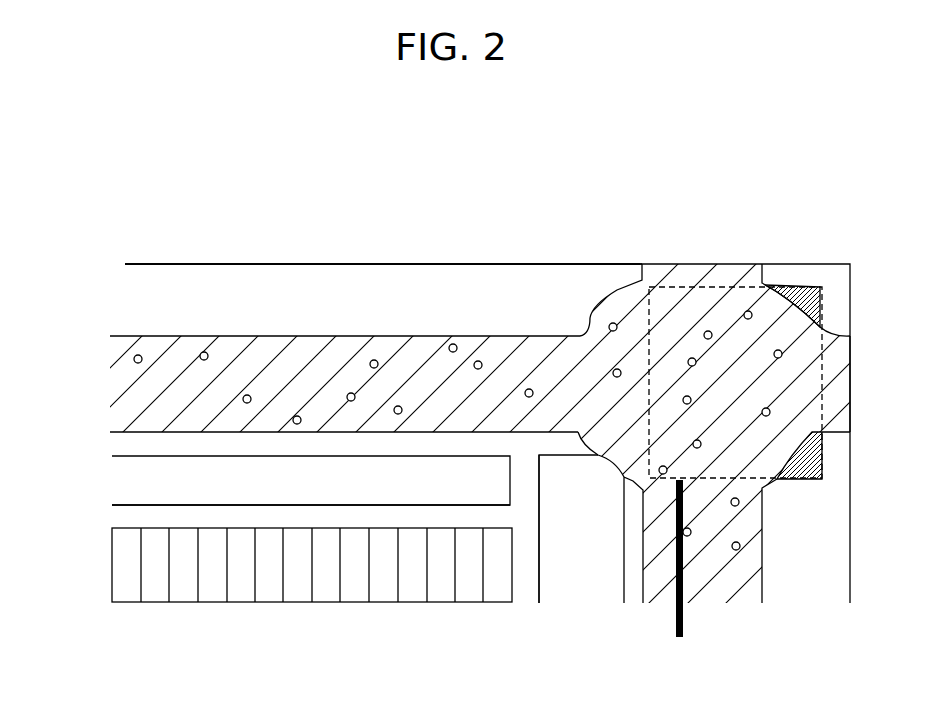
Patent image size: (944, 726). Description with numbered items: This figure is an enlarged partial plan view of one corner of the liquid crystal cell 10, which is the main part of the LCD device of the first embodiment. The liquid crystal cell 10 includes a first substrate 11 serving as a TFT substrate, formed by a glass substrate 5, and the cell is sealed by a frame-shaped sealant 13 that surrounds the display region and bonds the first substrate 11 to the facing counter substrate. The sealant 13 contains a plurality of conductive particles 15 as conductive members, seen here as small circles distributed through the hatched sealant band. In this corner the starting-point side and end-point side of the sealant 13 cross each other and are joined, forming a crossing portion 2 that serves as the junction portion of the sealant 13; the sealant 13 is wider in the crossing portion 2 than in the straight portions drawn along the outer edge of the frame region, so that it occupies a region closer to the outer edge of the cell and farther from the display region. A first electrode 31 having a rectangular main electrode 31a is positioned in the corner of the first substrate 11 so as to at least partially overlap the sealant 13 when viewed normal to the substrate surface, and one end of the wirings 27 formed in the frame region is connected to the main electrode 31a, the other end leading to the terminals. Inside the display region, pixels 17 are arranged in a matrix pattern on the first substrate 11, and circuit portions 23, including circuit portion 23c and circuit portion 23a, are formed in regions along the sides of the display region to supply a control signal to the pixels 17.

The liquid crystal cell 10 is at (193, 152).
The first substrate 11 is at (167, 263).
The glass substrate 5 is at (488, 266).
The sealant 13 is at (270, 350).
The conductive particles 15 is at (450, 344).
The crossing portion 2 is at (680, 323).
The main electrode 31a is at (800, 290).
The first electrode 31 is at (806, 371).
The circuit portions 23 is at (325, 529).
The circuit portion 23c is at (127, 487).
The circuit portion 23a is at (575, 592).
The pixels 17 is at (213, 593).
The wirings 27 is at (683, 620).